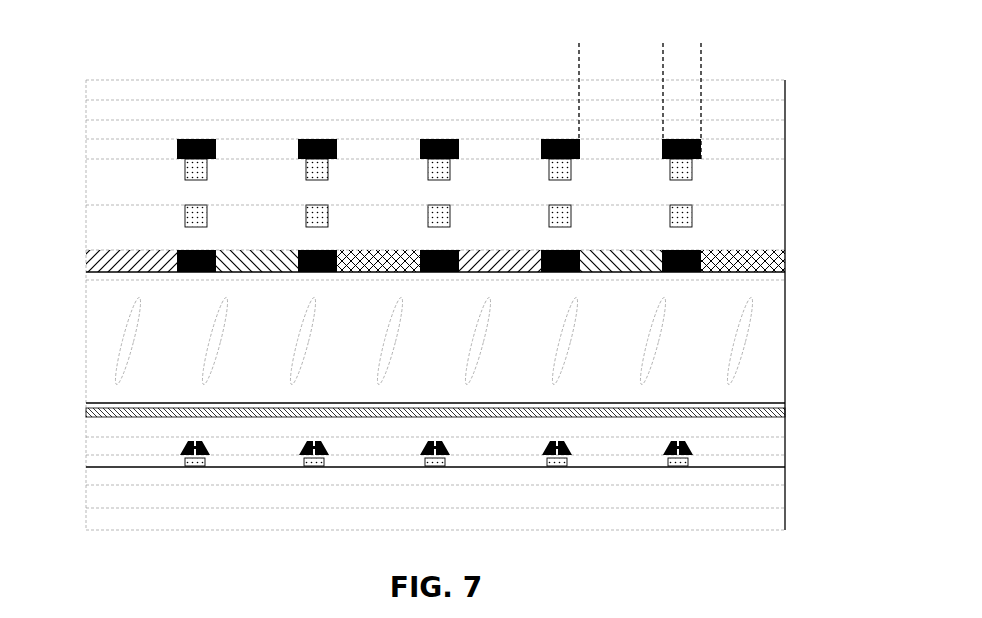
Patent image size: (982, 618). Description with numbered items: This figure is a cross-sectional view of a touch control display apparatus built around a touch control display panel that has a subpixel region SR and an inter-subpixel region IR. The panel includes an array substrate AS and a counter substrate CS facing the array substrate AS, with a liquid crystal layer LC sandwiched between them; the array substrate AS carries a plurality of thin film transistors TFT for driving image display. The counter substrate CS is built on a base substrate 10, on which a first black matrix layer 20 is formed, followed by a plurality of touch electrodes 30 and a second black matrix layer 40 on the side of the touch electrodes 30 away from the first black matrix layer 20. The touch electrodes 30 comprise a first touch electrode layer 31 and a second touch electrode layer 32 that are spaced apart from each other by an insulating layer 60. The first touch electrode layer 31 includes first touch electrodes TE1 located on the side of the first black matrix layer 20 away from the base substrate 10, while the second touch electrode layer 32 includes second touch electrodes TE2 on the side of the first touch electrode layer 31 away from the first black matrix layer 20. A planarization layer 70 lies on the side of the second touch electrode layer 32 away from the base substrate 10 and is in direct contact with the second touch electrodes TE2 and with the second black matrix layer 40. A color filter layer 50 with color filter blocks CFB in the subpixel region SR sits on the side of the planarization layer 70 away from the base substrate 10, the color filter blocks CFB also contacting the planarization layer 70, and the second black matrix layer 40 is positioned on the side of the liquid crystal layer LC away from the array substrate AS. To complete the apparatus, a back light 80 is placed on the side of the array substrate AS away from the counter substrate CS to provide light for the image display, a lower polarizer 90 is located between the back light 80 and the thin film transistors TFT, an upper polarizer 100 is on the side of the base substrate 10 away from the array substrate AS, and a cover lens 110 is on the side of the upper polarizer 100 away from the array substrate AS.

The cover lens 110 is at (775, 88).
The upper polarizer 100 is at (775, 108).
The base substrate 10 is at (775, 130).
The first black matrix layer 20 is at (701, 150).
The touch electrodes 30 is at (532, 193).
The first touch electrode layer 31 is at (682, 170).
The second touch electrode layer 32 is at (682, 215).
The second black matrix layer 40 is at (745, 252).
The color filter layer 50 is at (745, 266).
The insulating layer 60 is at (435, 193).
The planarization layer 70 is at (435, 237).
The lower polarizer 90 is at (775, 495).
The back light 80 is at (775, 520).
The subpixel region SR is at (579, 43).
The inter-subpixel region IR is at (701, 43).
The first touch electrodes TE1 is at (330, 172).
The second touch electrodes TE2 is at (330, 218).
The color filter blocks CFB is at (256, 264).
The thin film transistors TFT is at (212, 462).
The counter substrate CS is at (82, 120).
The liquid crystal layer LC is at (82, 285).
The array substrate AS is at (82, 403).